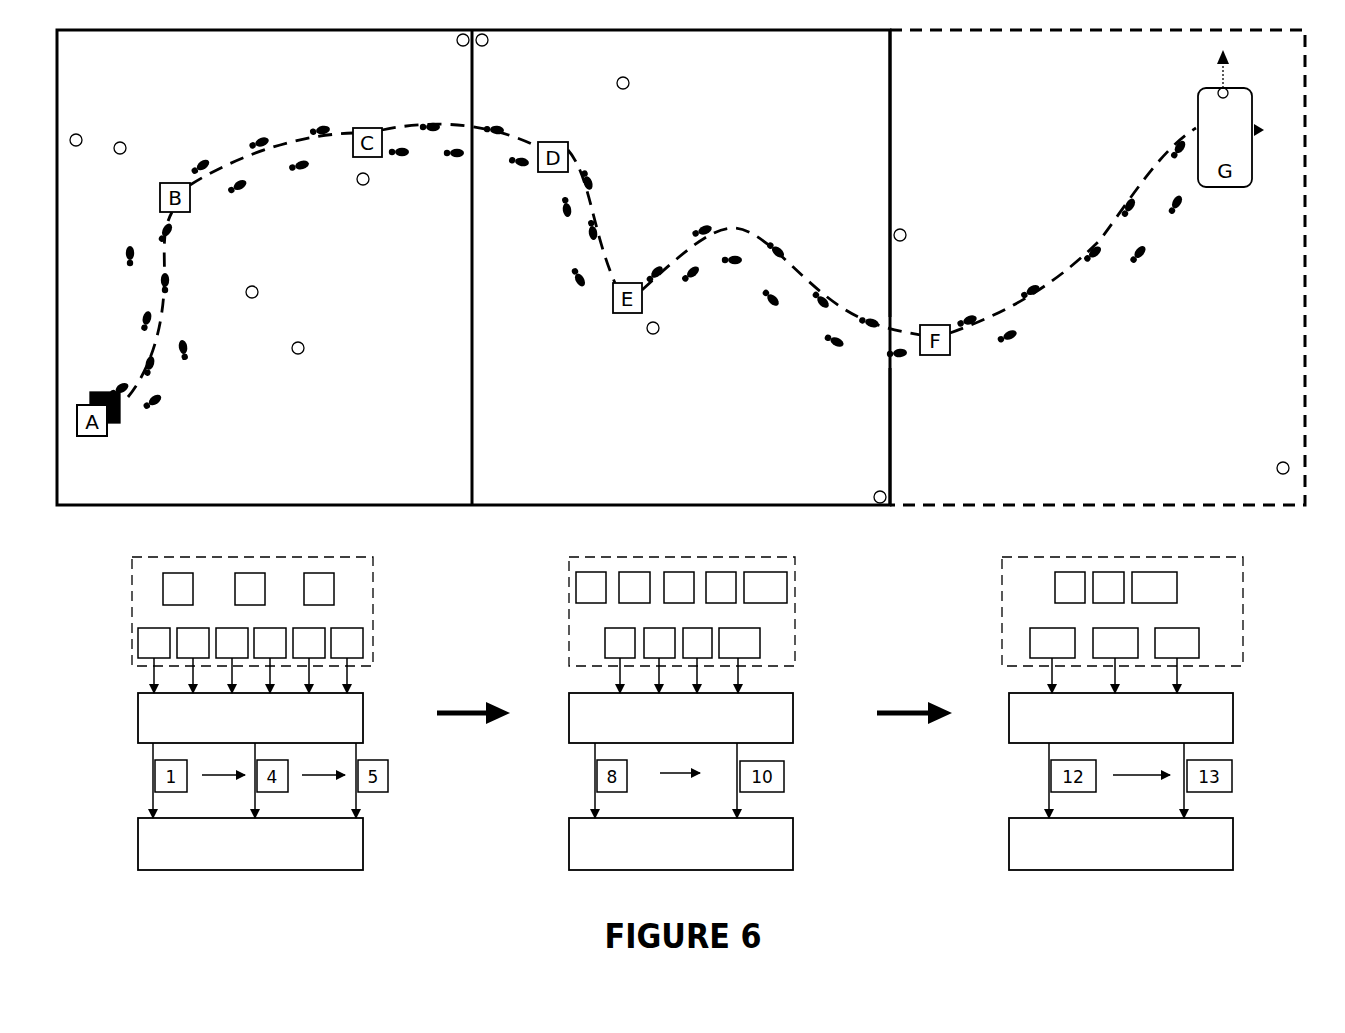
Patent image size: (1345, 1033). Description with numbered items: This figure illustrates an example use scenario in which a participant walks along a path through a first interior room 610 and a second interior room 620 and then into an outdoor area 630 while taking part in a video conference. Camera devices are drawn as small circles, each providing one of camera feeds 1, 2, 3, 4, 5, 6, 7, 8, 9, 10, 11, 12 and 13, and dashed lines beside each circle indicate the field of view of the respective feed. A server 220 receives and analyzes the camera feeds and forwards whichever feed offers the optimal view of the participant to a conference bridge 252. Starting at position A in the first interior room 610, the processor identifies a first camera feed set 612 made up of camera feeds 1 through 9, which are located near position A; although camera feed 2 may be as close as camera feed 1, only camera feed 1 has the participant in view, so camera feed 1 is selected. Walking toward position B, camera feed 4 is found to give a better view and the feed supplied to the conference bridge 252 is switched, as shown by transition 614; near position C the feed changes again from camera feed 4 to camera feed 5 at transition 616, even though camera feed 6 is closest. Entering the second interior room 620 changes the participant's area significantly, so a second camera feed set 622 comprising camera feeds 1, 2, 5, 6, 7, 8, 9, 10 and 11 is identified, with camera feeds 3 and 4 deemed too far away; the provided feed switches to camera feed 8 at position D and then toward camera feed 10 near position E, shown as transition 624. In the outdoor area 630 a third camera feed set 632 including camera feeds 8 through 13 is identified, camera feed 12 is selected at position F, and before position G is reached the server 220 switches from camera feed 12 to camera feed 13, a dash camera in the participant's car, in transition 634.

The interior room 1 610 is at (245, 53).
The interior room 2 620 is at (762, 53).
The outdoor area 630 is at (999, 53).
The first camera feed set 612 is at (388, 604).
The second camera feed set 622 is at (806, 603).
The third camera feed set 632 is at (1252, 617).
The transition 614 is at (223, 791).
The transition 616 is at (323, 791).
The transition 624 is at (680, 790).
The transition 634 is at (1141, 791).
The server 220 is at (685, 718).
The conference bridge 252 is at (685, 844).
The camera feed 1 is at (246, 294).
The camera feed 2 is at (298, 354).
The camera feed 3 is at (138, 137).
The camera feed 4 is at (117, 153).
The camera feed 5 is at (458, 43).
The camera feed 6 is at (422, 215).
The camera feed 7 is at (487, 43).
The camera feed 8 is at (618, 87).
The camera feed 9 is at (645, 390).
The camera feed 10 is at (856, 440).
The camera feed 11 is at (897, 241).
The camera feed 12 is at (1253, 412).
The camera feed 13 is at (1220, 97).